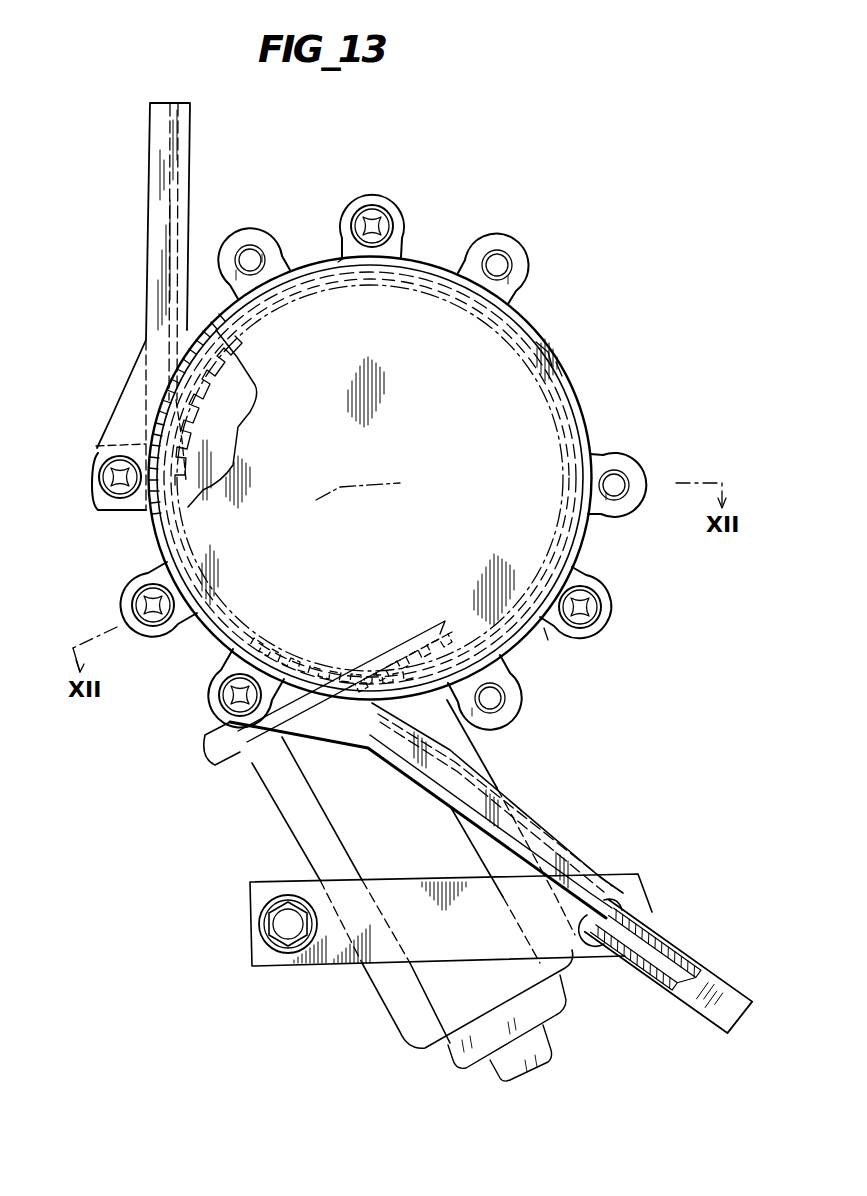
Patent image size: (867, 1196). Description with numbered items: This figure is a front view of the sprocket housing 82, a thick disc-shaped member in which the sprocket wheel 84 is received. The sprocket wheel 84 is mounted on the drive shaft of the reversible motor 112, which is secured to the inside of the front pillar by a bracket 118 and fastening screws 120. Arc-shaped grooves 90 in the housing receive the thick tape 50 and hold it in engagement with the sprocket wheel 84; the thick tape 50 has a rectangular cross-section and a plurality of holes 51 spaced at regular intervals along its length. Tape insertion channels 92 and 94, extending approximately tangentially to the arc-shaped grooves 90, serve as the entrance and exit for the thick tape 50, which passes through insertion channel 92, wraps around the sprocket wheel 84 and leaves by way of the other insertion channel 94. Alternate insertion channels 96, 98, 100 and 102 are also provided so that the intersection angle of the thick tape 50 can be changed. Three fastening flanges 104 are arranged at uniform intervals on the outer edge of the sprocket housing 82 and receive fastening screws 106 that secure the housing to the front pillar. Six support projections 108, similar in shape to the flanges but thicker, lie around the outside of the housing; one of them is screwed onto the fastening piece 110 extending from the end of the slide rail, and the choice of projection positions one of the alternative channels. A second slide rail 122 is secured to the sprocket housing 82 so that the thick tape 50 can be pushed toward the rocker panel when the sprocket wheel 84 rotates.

The thick tape 50 is at (700, 950).
The holes 51 is at (636, 916).
The sprocket housing 82 is at (560, 445).
The sprocket wheel 84 is at (246, 360).
The arc-shaped grooves 90 is at (190, 395).
The tape insertion channel 92 is at (170, 428).
The tape insertion channel 94 is at (325, 708).
The alternate insertion channel 96 is at (338, 262).
The alternate insertion channel 98 is at (545, 640).
The alternate insertion channel 100 is at (540, 342).
The alternate insertion channel 102 is at (562, 370).
The fastening flanges 104 is at (405, 232).
The fastening screws 106 is at (385, 208).
The support projections 108 is at (246, 228).
The fastening piece 110 is at (125, 400).
The reversible motor 112 is at (375, 992).
The bracket 118 is at (312, 962).
The fastening screws 120 is at (262, 924).
The second slide rail 122 is at (543, 822).